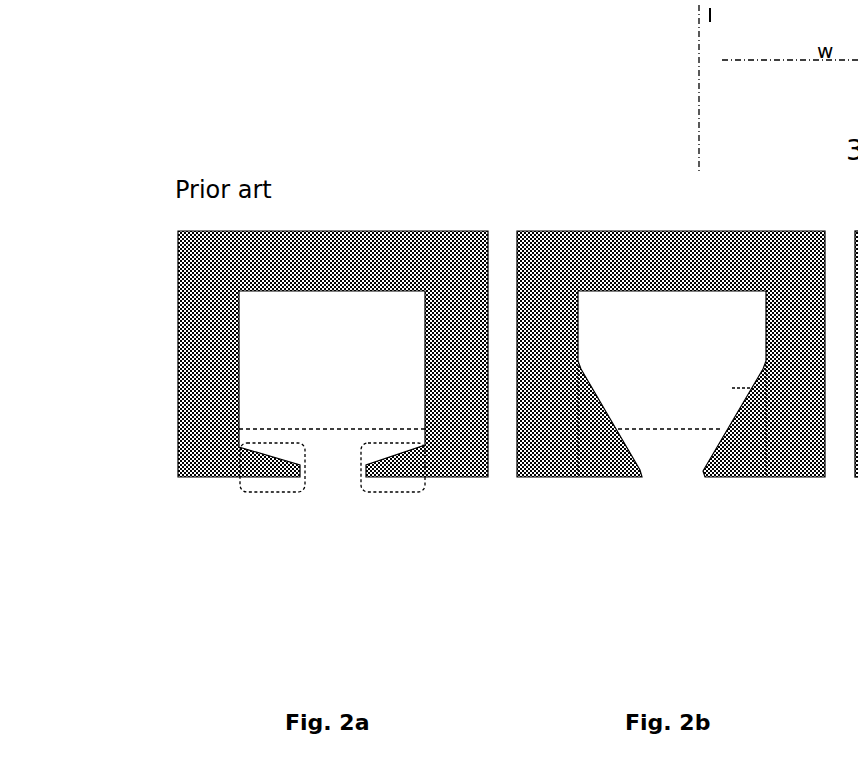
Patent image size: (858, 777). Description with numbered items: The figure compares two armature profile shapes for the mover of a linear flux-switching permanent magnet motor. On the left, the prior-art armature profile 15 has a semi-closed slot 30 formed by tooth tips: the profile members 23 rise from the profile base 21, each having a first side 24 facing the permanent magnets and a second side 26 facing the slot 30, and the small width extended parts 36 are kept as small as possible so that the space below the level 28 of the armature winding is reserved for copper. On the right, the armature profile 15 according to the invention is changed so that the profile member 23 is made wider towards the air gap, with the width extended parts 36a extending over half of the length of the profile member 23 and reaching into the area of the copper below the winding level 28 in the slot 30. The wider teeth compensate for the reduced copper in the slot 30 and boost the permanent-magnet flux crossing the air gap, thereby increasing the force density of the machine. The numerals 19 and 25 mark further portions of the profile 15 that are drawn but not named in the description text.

In FIG. 2A, the armature profile 15 is at (329, 209).
In FIG. 2B, the armature profile 15 is at (728, 211).
In FIG. 2A, the bottom side 19 is at (429, 488).
In FIG. 2B, the bottom side 19 is at (560, 488).
In FIG. 2A, the profile base 21 is at (393, 250).
In FIG. 2B, the profile base 21 is at (645, 255).
In FIG. 2A, the profile member 23 is at (190, 340).
In FIG. 2B, the profile member 23 is at (562, 390).
In FIG. 2A, the first side of the profile member 24 is at (168, 351).
In FIG. 2B, the lower wall portion 25 is at (800, 437).
In FIG. 2A, the second side of the profile member 26 is at (255, 348).
In FIG. 2B, the second side of the profile member 26 is at (755, 388).
In FIG. 2A, the level of the armature winding 28 is at (332, 440).
In FIG. 2B, the level of the armature winding 28 is at (682, 440).
In FIG. 2A, the slot 30 is at (343, 345).
In FIG. 2B, the slot 30 is at (672, 360).
In FIG. 2A, the width extended parts of the profile members 36 is at (262, 467).
In FIG. 2B, the wedge-shaped projections 36a is at (610, 443).